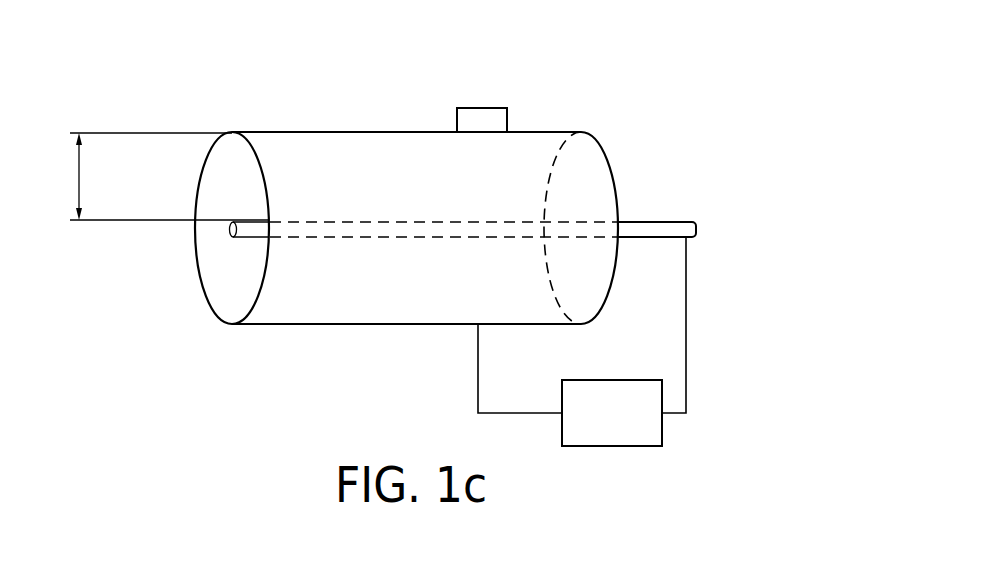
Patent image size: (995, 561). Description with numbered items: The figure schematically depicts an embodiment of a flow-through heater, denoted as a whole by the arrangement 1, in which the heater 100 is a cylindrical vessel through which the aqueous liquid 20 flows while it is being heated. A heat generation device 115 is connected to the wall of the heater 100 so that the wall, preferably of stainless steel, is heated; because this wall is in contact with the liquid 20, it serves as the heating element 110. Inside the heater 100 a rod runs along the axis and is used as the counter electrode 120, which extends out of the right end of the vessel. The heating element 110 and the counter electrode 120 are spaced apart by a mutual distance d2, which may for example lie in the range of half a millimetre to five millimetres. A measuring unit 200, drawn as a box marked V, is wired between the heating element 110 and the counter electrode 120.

The sensor device 1 is at (318, 98).
The aqueous liquid 20 is at (220, 181).
The heater 100 is at (188, 326).
The heating element 110 is at (358, 326).
The heat generation device 115 is at (477, 118).
The counter electrode 120 is at (653, 226).
The voltage measuring device 200 is at (692, 438).
The distance d2 is at (62, 176).